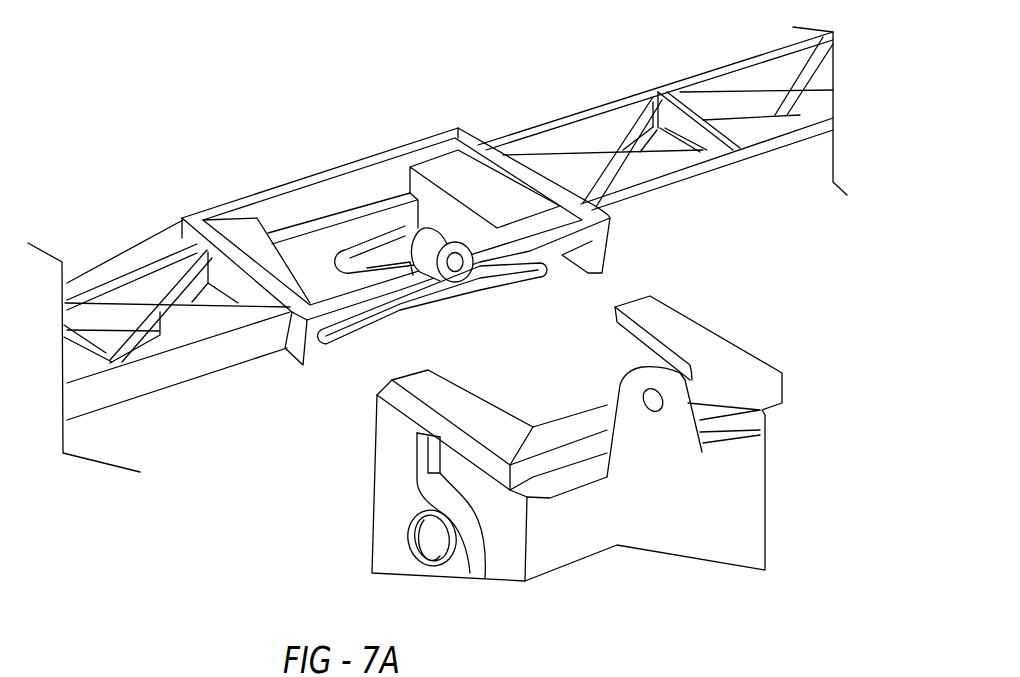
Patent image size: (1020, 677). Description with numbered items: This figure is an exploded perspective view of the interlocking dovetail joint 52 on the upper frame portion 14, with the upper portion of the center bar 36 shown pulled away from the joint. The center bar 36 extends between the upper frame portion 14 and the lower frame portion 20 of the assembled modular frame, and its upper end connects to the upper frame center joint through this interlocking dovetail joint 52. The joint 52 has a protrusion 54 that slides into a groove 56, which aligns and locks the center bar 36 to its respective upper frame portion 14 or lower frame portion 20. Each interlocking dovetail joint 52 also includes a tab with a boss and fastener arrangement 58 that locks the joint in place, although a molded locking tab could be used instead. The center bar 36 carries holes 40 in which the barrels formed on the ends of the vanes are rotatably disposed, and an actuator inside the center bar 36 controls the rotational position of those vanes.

The upper frame portion 14 is at (437, 249).
The lower frame portion 20 is at (760, 72).
The interlocking dovetail joint 52 is at (473, 93).
The protrusion 54 is at (350, 340).
The groove 56 is at (433, 349).
The tab with a boss and fastener arrangement 58 is at (648, 386).
The center bar 36 is at (567, 438).
The holes 40 is at (432, 532).